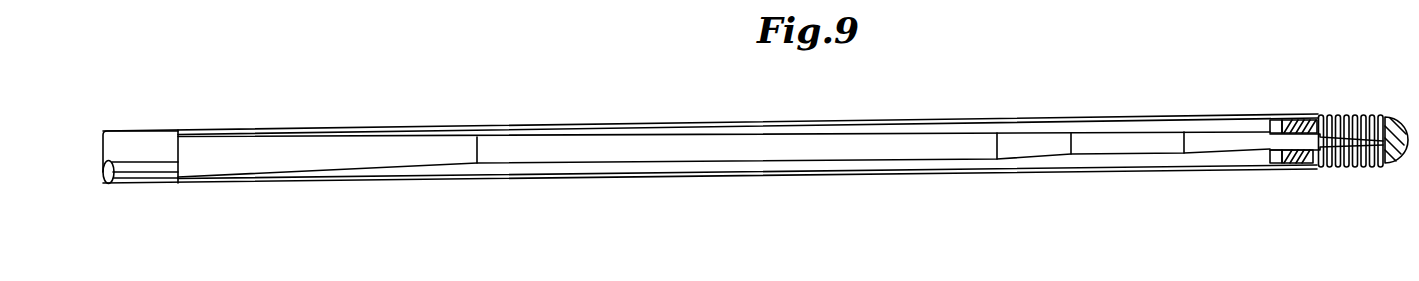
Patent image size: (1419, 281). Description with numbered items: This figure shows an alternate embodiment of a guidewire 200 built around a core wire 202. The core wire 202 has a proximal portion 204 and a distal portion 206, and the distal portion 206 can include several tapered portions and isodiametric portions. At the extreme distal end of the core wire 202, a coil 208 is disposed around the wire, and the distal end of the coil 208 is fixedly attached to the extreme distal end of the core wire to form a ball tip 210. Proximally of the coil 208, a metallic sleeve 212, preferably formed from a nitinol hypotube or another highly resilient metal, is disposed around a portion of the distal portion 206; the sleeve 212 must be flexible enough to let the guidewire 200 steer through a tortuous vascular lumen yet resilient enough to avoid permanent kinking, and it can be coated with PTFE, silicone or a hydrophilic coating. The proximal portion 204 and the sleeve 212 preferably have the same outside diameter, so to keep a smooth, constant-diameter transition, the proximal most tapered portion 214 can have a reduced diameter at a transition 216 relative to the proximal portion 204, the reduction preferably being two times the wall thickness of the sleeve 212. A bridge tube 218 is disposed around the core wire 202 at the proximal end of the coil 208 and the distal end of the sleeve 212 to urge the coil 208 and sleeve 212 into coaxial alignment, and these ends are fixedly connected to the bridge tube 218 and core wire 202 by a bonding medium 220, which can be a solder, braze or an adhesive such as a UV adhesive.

The guidewire 200 is at (412, 114).
The core wire 202 is at (271, 150).
The proximal portion 204 is at (155, 143).
The distal portion 206 is at (607, 146).
The coil 208 is at (1335, 113).
The ball tip 210 is at (1395, 163).
The metallic sleeve 212 is at (780, 178).
The proximal most tapered portion 214 is at (215, 168).
The transition 216 is at (176, 185).
The bridge tube 218 is at (1287, 168).
The bonding medium 220 is at (1312, 167).